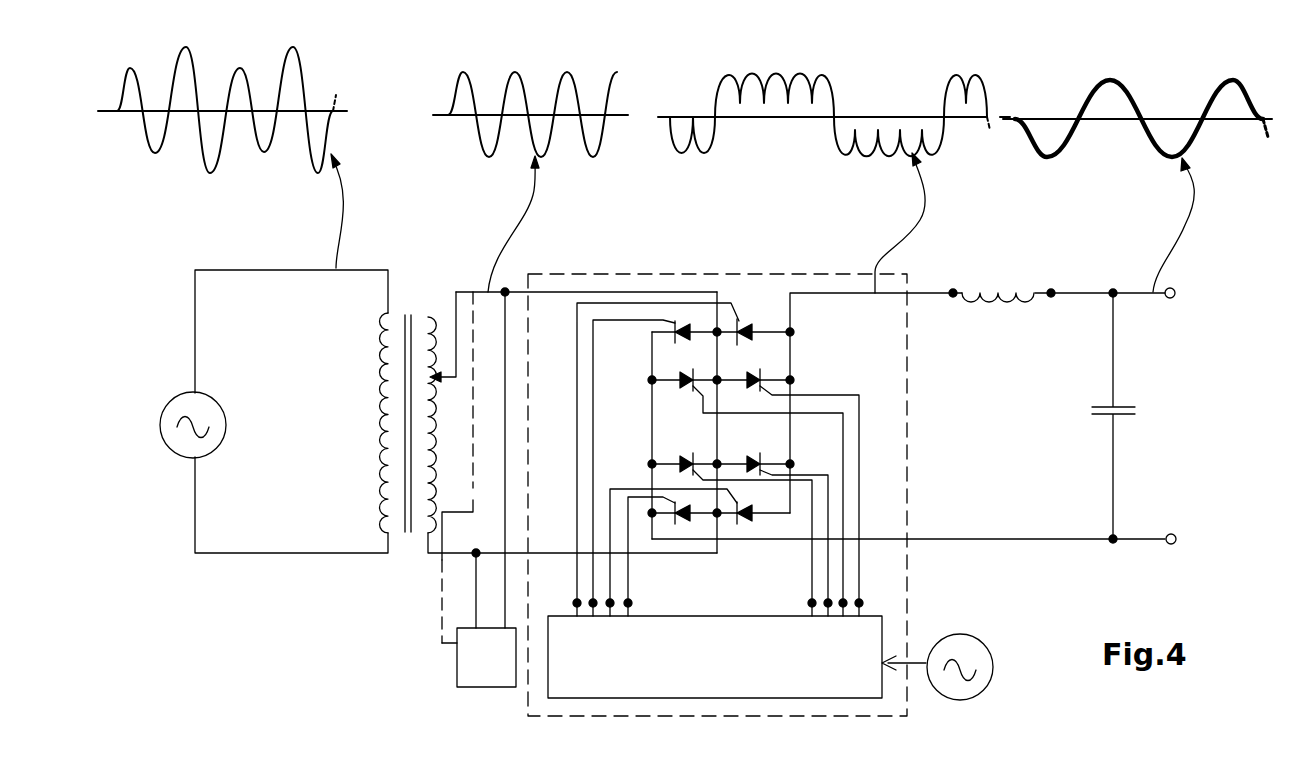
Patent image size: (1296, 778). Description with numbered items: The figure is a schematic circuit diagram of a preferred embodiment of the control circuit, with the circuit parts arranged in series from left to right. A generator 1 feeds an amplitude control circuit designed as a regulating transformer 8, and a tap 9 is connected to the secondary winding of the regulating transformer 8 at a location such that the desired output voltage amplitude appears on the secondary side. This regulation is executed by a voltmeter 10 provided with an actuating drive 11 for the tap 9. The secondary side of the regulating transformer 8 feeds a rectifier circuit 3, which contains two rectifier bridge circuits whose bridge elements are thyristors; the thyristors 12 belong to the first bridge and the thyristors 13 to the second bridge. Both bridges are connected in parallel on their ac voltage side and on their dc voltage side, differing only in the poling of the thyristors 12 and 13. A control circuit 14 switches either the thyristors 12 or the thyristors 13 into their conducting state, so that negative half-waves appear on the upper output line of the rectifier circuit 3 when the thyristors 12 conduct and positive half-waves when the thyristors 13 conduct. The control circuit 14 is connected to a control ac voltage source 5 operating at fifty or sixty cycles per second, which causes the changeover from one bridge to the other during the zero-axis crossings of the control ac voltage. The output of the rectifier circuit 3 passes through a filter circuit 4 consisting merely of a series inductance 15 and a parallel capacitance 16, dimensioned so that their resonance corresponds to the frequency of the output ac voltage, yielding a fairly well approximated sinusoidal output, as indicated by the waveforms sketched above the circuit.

The generator 1 is at (170, 447).
The rectifier circuit 3 is at (595, 275).
The filter circuit 4 is at (1040, 260).
The control ac voltage source 5 is at (970, 636).
The regulating transformer 8 is at (415, 545).
The tap 9 is at (457, 291).
The voltmeter 10 is at (492, 683).
The actuating drive 11 is at (473, 500).
The thyristors 12 is at (688, 344).
The thyristors 13 is at (686, 394).
The control circuit 14 is at (645, 698).
The series inductance 15 is at (990, 300).
The parallel capacitance 16 is at (1110, 405).